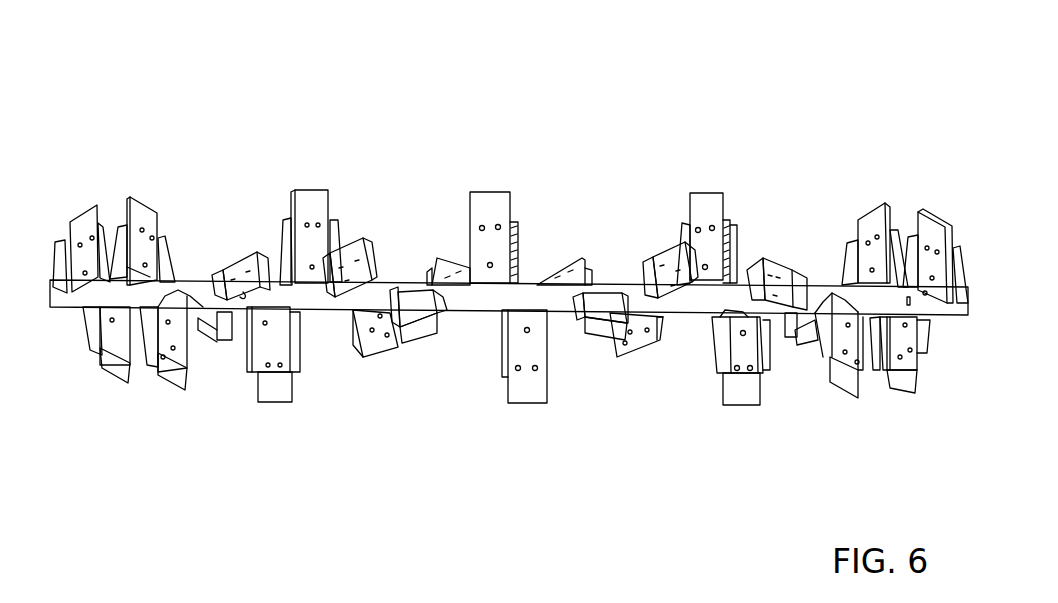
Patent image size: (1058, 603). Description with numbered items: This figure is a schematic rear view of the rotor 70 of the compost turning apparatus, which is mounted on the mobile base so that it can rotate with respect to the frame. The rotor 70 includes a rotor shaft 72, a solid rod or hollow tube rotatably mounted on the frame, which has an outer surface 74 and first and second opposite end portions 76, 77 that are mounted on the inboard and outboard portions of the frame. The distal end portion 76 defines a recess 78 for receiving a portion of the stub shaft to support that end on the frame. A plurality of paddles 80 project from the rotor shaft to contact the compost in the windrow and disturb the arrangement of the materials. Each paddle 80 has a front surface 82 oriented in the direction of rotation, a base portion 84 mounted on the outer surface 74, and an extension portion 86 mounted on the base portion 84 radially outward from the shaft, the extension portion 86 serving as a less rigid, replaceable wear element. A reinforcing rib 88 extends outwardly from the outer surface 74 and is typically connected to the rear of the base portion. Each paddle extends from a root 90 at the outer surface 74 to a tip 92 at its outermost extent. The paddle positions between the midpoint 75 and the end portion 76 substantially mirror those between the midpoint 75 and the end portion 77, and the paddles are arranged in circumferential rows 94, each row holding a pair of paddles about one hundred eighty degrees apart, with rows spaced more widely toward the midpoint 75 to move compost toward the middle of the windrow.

The rotor 70 is at (621, 89).
The rotor shaft 72 is at (790, 318).
The outer surface 74 is at (312, 300).
The midpoint 75 is at (496, 445).
The first opposite end portion 76 is at (962, 211).
The second opposite end portion 77 is at (49, 212).
The recess 78 is at (43, 297).
The paddle 80 is at (322, 181).
The front surface 82 is at (312, 212).
The base portion 84 is at (270, 352).
The extension portion 86 is at (272, 388).
The reinforcing rib 88 is at (214, 275).
The root 90 is at (566, 312).
The tip 92 is at (520, 405).
The circumferential row 94 is at (705, 186).